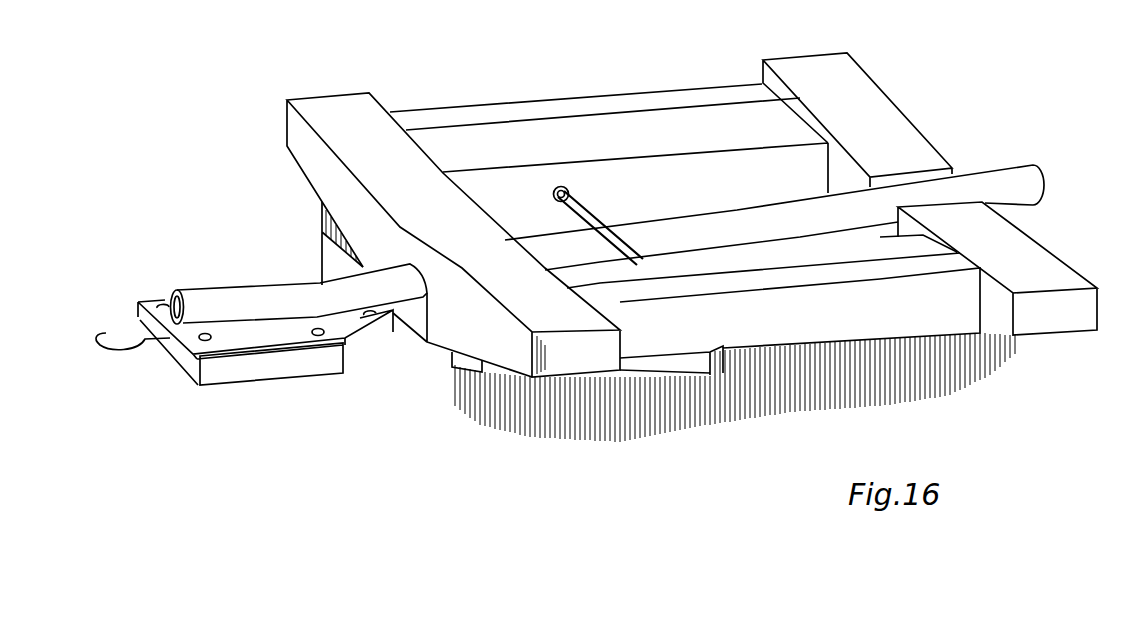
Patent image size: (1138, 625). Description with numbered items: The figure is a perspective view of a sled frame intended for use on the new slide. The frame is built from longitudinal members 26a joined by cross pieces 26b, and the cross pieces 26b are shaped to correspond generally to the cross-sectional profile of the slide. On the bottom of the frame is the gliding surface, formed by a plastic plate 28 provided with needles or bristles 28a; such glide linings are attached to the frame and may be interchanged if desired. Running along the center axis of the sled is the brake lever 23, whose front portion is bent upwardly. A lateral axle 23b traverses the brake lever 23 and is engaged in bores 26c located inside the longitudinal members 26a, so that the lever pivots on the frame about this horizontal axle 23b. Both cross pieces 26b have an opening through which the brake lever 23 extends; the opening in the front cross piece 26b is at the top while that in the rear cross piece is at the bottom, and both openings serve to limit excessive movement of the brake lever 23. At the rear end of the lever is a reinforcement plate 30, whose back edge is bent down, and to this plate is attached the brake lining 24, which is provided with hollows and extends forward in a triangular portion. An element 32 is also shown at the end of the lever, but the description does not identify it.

The brake lever 23 is at (358, 296).
The horizontal axle 23b is at (559, 187).
The brake lining 24 is at (252, 368).
The longitudinal members 26a is at (768, 315).
The cross pieces 26b is at (840, 104).
The bores 26c is at (567, 186).
The plastic plate 28 is at (480, 362).
The needles or bristles 28a is at (513, 415).
The reinforcement plate 30 is at (288, 350).
The hook 32 is at (133, 350).